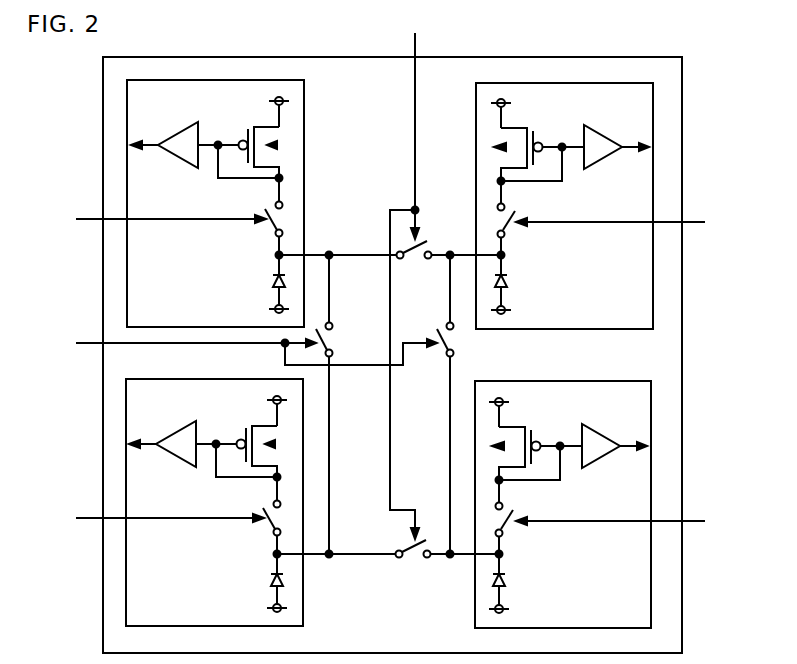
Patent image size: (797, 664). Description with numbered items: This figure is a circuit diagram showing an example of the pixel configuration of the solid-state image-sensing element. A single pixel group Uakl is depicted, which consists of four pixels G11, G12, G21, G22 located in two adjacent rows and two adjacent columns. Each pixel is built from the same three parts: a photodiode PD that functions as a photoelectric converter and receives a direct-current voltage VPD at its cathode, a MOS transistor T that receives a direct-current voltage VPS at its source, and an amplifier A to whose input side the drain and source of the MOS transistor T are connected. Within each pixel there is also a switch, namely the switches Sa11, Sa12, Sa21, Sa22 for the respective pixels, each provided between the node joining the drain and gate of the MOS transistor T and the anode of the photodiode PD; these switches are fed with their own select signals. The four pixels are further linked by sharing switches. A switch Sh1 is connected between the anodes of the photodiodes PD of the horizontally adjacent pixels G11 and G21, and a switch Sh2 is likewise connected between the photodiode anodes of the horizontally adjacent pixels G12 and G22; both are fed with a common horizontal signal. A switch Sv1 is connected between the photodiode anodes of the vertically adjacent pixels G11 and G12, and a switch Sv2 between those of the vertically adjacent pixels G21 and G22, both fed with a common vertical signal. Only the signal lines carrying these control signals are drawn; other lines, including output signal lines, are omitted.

The pixel group Uakl is at (387, 332).
The pixel G11 is at (215, 203).
The pixel G12 is at (214, 502).
The pixel G21 is at (564, 206).
The pixel G22 is at (563, 504).
The MOS transistor T is at (389, 298).
The amplifier A is at (389, 306).
The photodiode PD is at (389, 429).
The direct-current voltage VPS is at (388, 258).
The direct-current voltage VPD is at (389, 460).
The switch Sa11 is at (250, 216).
The switch Sa12 is at (249, 515).
The switch Sa21 is at (528, 219).
The switch Sa22 is at (527, 518).
The switch Sh1 is at (421, 263).
The switch Sh2 is at (420, 562).
The switch Sv1 is at (346, 404).
The switch Sv2 is at (468, 404).